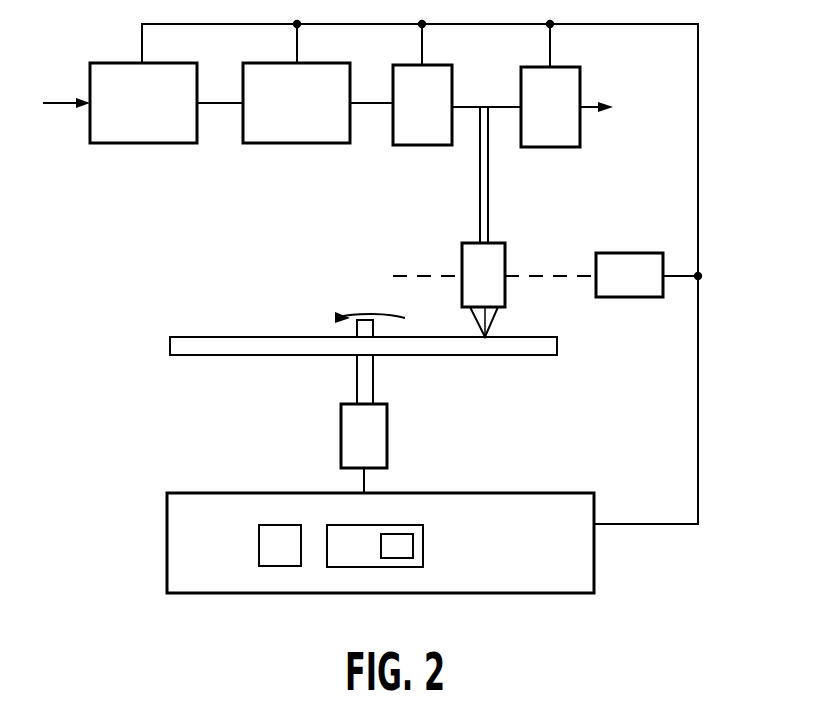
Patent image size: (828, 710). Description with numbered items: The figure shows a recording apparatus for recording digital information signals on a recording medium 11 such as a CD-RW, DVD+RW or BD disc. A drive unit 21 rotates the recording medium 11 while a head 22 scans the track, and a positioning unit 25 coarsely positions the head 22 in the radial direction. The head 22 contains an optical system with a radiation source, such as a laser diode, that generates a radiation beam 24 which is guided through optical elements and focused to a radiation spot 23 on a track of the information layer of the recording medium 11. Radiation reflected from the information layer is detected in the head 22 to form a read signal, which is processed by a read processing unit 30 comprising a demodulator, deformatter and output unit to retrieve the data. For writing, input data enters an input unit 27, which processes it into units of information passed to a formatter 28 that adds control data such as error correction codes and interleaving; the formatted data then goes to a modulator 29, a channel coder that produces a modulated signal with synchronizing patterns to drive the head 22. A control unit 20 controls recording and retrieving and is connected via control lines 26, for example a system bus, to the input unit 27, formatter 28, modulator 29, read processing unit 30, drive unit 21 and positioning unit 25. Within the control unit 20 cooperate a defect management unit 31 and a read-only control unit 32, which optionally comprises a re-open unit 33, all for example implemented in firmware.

The recording medium 11 is at (535, 352).
The control unit 20 is at (563, 502).
The drive unit 21 is at (382, 424).
The head 22 is at (462, 258).
The radiation spot 23 is at (487, 335).
The radiation beam 24 is at (472, 319).
The positioning unit 25 is at (624, 295).
The control lines 26 is at (698, 116).
The input unit 27 is at (141, 132).
The formatter 28 is at (252, 135).
The modulator 29 is at (418, 134).
The read processing unit 30 is at (580, 77).
The defect management unit 31 is at (279, 566).
The read-only control unit 32 is at (349, 567).
The re-open unit 33 is at (400, 558).